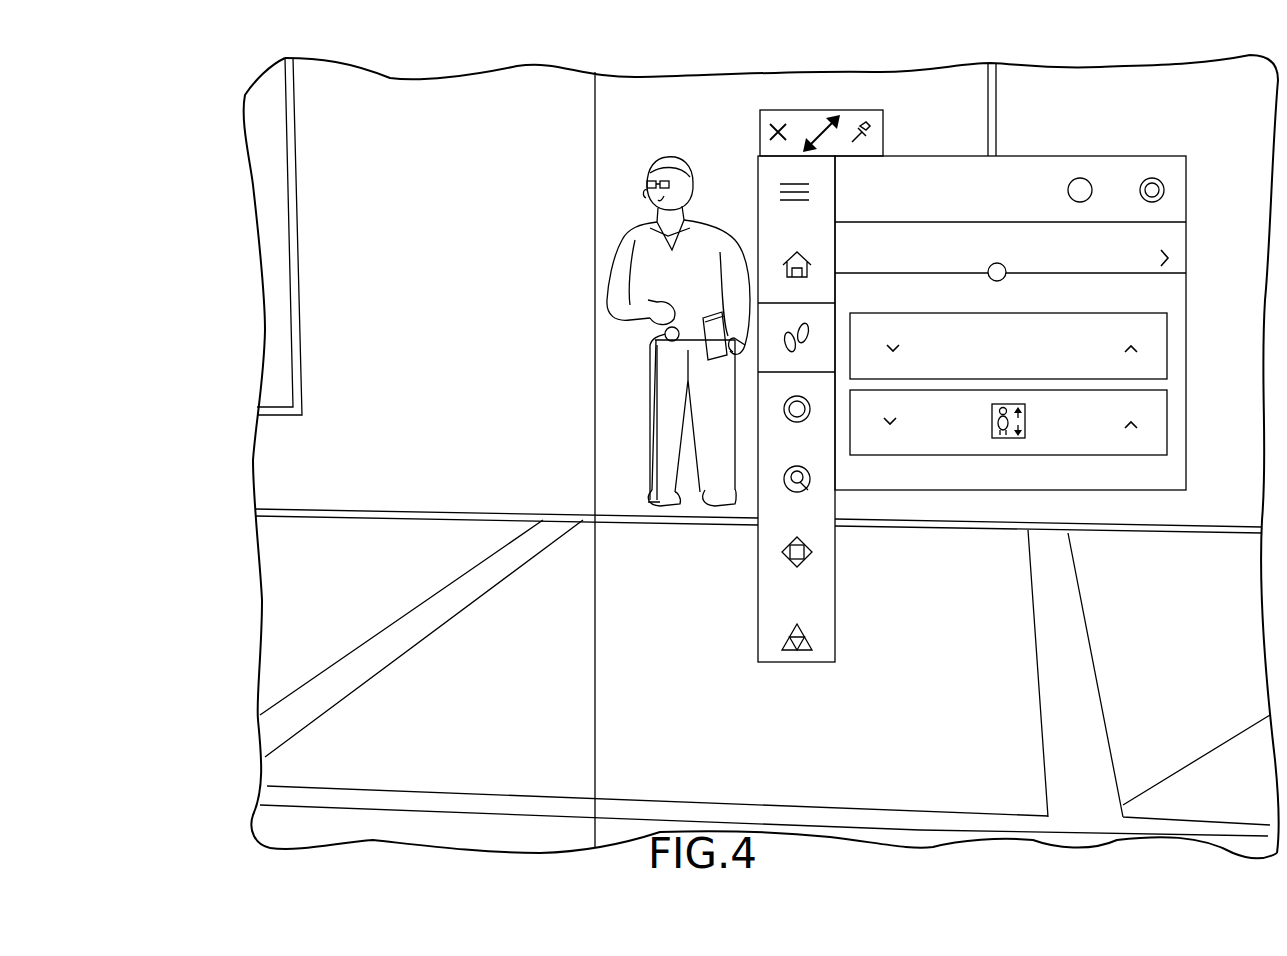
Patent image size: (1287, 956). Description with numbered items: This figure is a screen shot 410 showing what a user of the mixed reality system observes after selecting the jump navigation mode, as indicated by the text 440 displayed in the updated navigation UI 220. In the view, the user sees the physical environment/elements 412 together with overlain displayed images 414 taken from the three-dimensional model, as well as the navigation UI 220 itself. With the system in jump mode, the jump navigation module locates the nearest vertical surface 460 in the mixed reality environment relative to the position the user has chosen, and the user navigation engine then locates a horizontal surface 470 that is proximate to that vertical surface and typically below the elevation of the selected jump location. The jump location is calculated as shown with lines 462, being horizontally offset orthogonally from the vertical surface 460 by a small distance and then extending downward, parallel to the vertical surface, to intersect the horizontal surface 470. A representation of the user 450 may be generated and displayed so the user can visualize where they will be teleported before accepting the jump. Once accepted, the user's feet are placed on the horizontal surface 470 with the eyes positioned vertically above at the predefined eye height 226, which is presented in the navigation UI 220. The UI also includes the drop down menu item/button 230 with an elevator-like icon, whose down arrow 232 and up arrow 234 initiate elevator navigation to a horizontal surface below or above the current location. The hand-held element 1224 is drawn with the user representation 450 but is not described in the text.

The screen shot 410 is at (236, 70).
The physical environment/elements 412 is at (278, 380).
The displayed images 414 is at (293, 788).
The vertical surface 460 is at (640, 105).
The horizontal surface 470 is at (625, 520).
The representation of the user 450 is at (633, 268).
The hand controller / cane handle 1224 is at (664, 330).
The lines 462 is at (650, 414).
The navigation UI 220 is at (1061, 150).
The text 440 is at (1150, 232).
The eye height 226 is at (960, 330).
The down arrow 232 is at (903, 436).
The drop down menu item/button 230 is at (1026, 451).
The up arrow 234 is at (1142, 444).